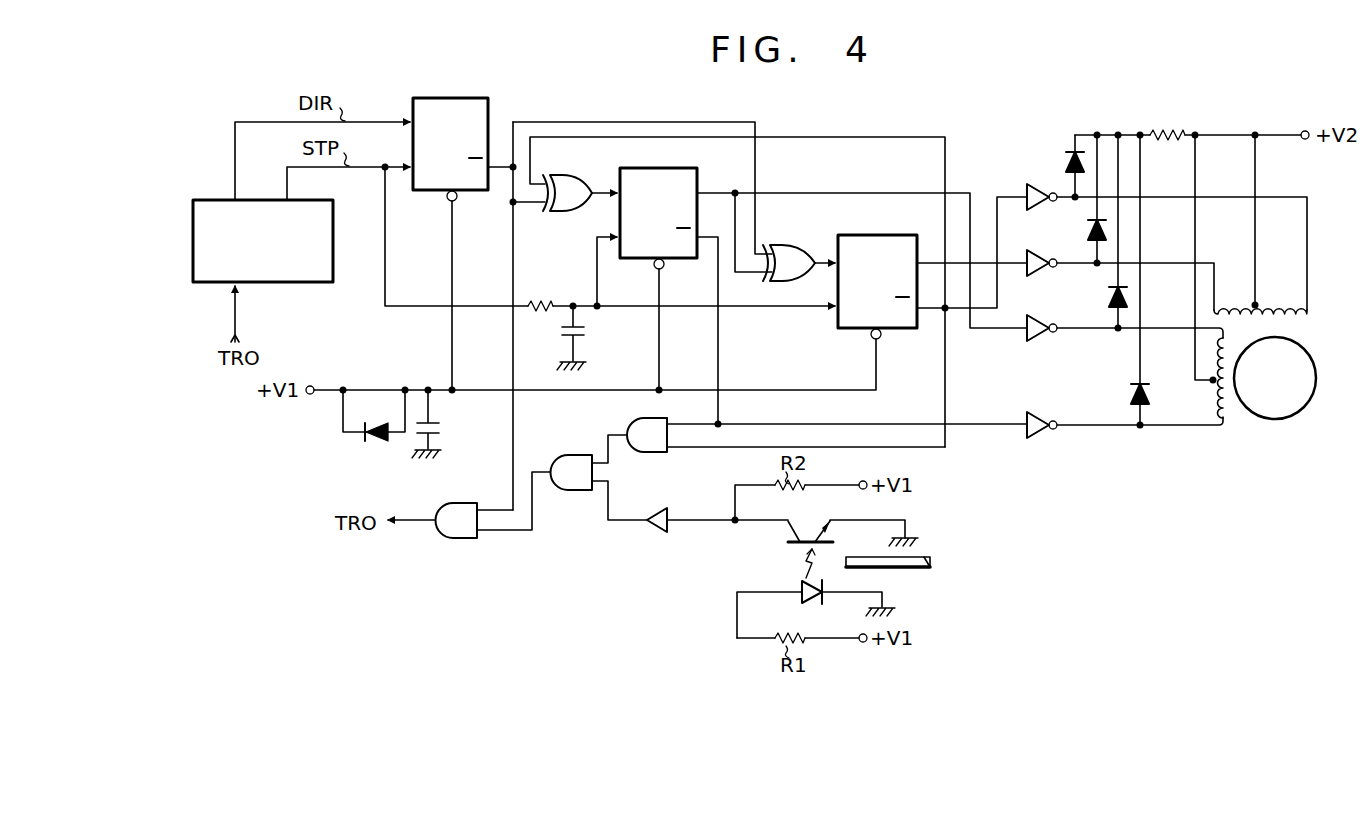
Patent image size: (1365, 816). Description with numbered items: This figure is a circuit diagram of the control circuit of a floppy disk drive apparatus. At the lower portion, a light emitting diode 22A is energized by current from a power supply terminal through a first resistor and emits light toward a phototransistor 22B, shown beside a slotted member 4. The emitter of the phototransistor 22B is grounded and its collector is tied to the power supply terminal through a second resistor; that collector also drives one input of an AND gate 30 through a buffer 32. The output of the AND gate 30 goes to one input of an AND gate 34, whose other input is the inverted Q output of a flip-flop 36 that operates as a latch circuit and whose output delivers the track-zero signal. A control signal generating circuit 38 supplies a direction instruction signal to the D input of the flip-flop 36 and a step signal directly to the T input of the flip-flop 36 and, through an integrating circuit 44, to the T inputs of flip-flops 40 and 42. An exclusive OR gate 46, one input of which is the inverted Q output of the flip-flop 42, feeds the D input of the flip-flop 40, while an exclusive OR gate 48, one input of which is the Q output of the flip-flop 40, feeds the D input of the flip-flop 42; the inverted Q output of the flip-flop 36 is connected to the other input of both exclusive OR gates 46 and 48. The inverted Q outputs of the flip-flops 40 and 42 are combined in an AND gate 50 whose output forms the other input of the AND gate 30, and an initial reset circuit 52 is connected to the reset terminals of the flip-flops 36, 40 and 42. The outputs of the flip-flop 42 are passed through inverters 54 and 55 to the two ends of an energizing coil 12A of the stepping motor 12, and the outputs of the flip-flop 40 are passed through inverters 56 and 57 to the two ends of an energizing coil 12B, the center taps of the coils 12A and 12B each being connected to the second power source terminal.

The slot / detected object 4 is at (930, 563).
The stepping motor 12 is at (1285, 422).
The energizing coil 12A is at (1300, 316).
The energizing coil 12B is at (1217, 430).
The light emitting diode 22A is at (800, 588).
The phototransistor 22B is at (790, 525).
The AND gate 30 is at (577, 492).
The buffer 32 is at (653, 534).
The AND gate 34 is at (461, 540).
The flip-flop 36 is at (444, 97).
The control signal generating circuit 38 is at (270, 283).
The flip-flop 40 is at (627, 260).
The flip-flop 42 is at (847, 332).
The integrating circuit 44 is at (542, 304).
The exclusive OR gate 46 is at (570, 215).
The exclusive OR gate 48 is at (788, 244).
The AND gate 50 is at (653, 453).
The initial reset circuit 52 is at (391, 442).
The inverter 54 is at (1048, 187).
The inverter 55 is at (1048, 262).
The inverter 56 is at (1048, 327).
The inverter 57 is at (1048, 420).